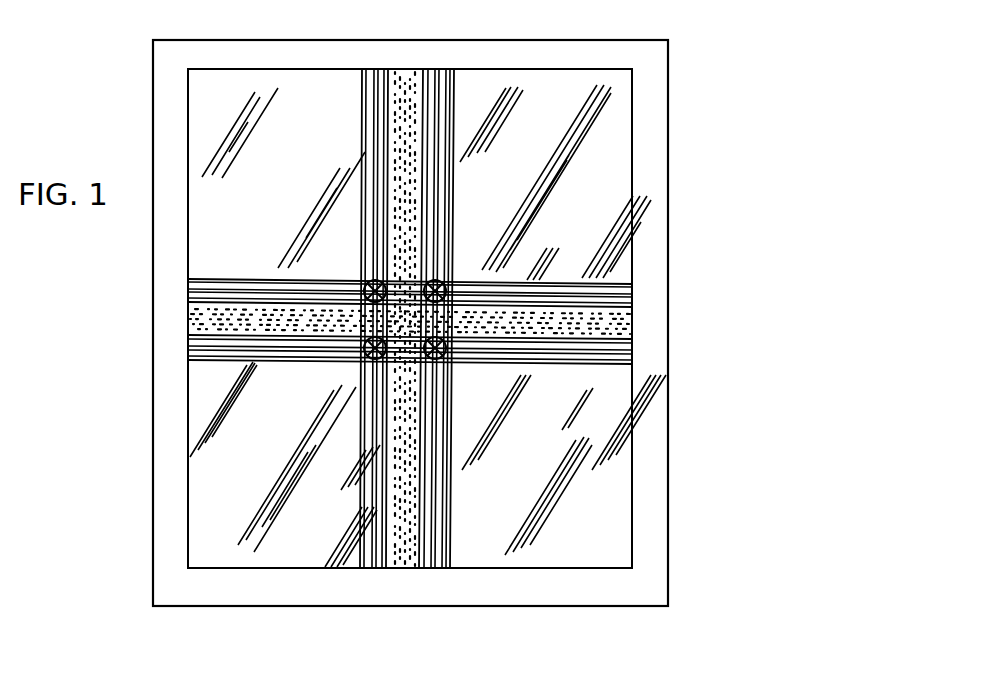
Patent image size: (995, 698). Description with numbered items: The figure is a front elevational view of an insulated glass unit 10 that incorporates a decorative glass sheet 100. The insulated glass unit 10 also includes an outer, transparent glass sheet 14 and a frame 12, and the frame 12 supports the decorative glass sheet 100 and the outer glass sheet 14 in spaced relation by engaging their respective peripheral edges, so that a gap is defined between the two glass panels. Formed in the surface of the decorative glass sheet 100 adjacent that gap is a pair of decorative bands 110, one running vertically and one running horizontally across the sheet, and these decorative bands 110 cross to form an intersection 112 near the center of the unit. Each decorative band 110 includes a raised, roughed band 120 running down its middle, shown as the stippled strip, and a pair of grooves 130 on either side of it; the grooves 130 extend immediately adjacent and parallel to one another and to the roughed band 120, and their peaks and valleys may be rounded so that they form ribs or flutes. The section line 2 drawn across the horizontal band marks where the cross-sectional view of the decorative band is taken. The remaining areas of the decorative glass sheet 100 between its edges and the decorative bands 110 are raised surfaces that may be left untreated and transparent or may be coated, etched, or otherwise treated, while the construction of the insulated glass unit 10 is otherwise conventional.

The insulated glass unit 10 is at (132, 356).
The frame 12 is at (164, 553).
The outer, transparent glass sheet 14 is at (206, 498).
The section line 2- 2 is at (313, 408).
The decorative glass sheet 100 is at (474, 331).
The decorative band 110 is at (458, 96).
The intersection 112 is at (460, 373).
The raised, roughed band 120 is at (622, 331).
The grooves 130 is at (363, 568).